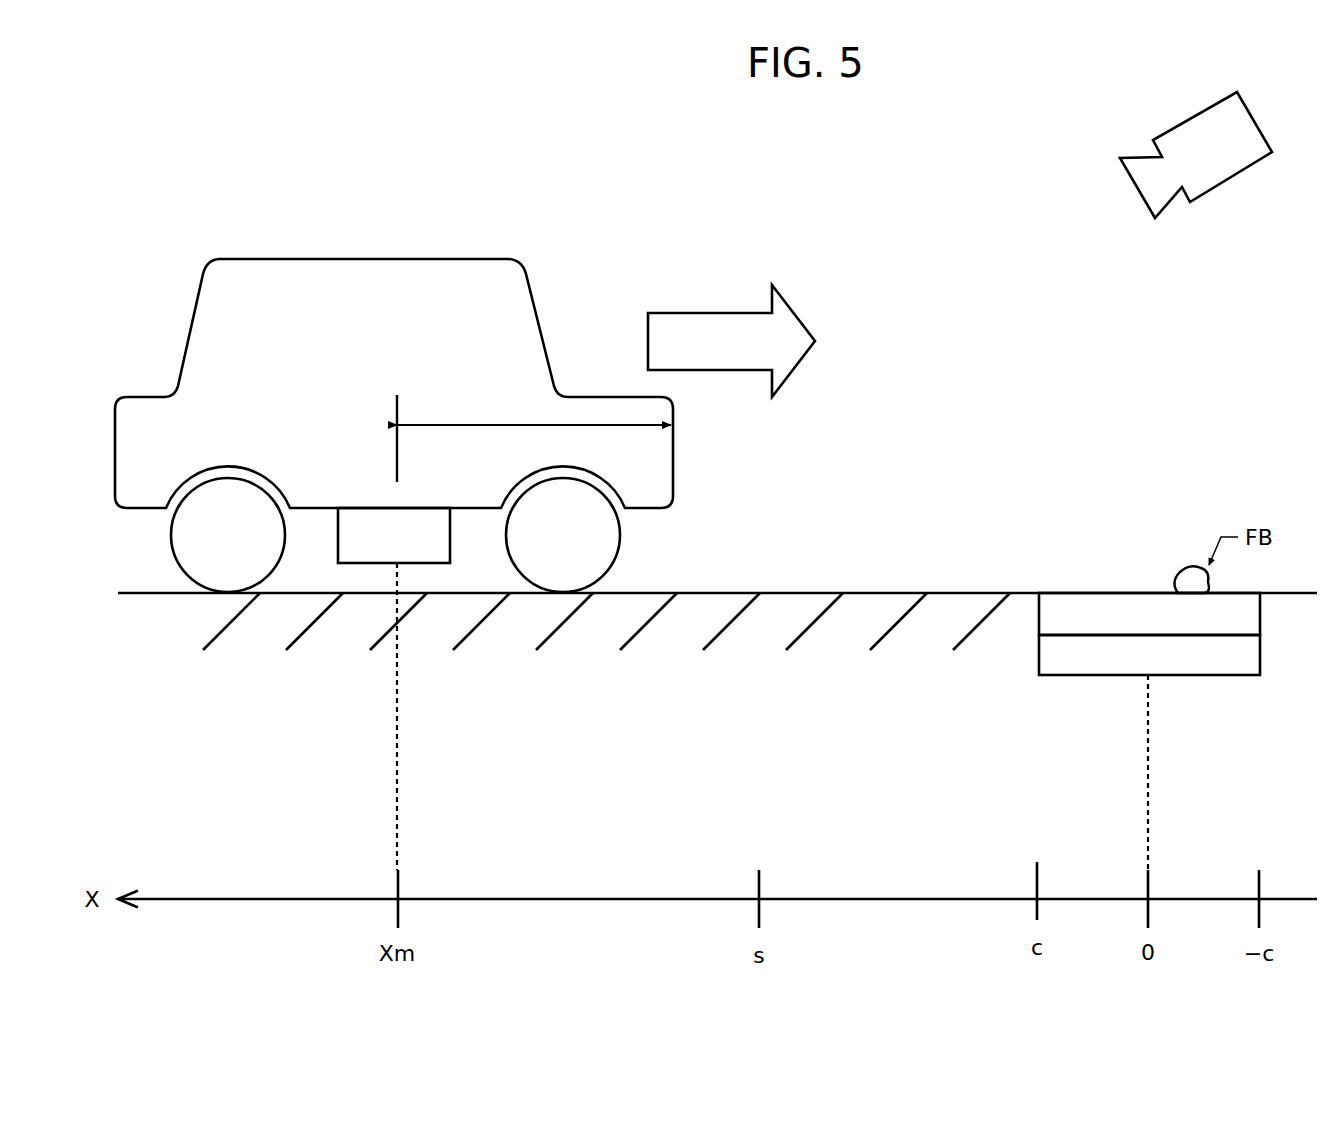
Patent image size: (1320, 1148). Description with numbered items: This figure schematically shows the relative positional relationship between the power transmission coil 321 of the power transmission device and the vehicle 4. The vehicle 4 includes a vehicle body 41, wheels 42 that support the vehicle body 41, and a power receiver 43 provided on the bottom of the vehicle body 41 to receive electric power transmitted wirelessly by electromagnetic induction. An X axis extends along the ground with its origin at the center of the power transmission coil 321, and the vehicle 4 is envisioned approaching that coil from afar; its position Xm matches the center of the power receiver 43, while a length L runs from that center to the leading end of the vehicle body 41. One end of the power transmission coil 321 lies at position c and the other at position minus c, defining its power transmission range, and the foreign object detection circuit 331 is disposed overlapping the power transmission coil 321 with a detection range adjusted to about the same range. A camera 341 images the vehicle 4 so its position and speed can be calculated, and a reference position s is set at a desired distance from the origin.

The vehicle 4 is at (489, 212).
The vehicle body 41 is at (394, 383).
The wheels 42 is at (395, 535).
The power receiver 43 is at (394, 535).
The foreign object detection circuit 331 is at (1149, 614).
The power transmission coil 321 is at (1149, 655).
The camera 341 is at (1196, 155).